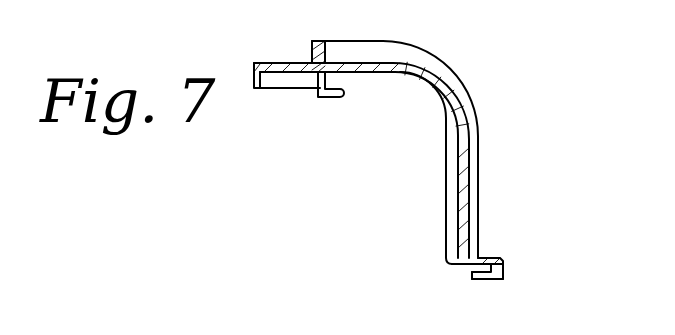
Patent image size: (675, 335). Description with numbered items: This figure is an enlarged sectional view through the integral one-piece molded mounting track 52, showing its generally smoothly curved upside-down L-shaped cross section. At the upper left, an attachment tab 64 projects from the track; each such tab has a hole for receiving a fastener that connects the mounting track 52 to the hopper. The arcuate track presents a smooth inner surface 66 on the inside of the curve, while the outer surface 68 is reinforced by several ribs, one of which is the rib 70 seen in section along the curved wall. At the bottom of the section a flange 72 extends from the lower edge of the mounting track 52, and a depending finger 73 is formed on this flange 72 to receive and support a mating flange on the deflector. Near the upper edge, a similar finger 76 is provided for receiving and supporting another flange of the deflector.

The mounting track 52 is at (384, 42).
The attachment tab 64 is at (270, 63).
The inner surface 66 is at (450, 118).
The outer surface 68 is at (478, 121).
The rib 70 is at (472, 163).
The flange 72 is at (503, 258).
The depending finger 73 is at (485, 282).
The finger 76 is at (330, 98).